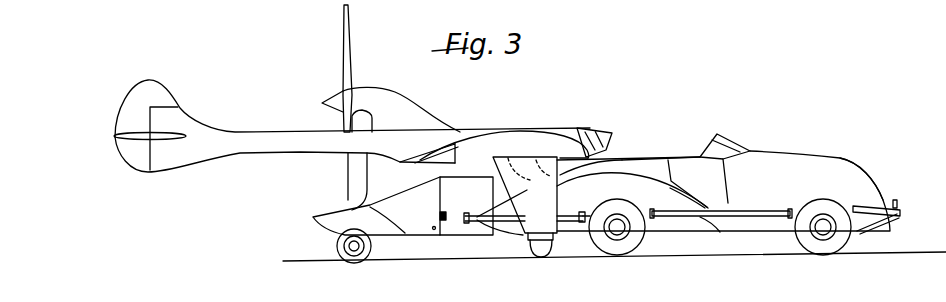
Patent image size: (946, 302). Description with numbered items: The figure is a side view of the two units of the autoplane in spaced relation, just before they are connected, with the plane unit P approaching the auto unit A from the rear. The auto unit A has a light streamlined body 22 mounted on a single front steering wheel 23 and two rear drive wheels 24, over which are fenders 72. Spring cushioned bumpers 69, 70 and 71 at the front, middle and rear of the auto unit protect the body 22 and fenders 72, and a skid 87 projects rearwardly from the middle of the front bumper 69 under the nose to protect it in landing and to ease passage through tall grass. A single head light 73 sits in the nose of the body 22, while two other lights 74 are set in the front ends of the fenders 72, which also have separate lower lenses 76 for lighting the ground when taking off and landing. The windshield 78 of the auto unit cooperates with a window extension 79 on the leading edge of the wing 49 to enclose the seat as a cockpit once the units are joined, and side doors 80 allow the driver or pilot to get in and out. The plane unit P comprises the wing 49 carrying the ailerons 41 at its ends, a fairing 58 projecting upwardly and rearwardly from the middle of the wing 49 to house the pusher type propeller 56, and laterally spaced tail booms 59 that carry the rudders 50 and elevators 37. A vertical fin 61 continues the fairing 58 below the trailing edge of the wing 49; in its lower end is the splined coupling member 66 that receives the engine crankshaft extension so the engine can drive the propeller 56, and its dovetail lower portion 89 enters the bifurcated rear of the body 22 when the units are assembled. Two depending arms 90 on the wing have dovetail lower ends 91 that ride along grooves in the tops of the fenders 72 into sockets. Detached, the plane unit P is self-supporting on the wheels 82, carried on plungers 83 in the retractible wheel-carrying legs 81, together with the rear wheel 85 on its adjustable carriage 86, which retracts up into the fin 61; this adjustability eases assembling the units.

The rudders 50 is at (152, 85).
The elevators 37 is at (128, 139).
The tail booms 59 is at (298, 148).
The pusher type propeller 56 is at (348, 52).
The fairing 58 is at (412, 112).
The vertical fin 61 is at (378, 181).
The ailerons 41 is at (428, 157).
The dovetail lower portion 89 is at (438, 188).
The coupling member 66 is at (446, 214).
The carriage 86 is at (400, 240).
The rear wheel 85 is at (372, 249).
The plungers 83 is at (527, 236).
The wheels 82 is at (553, 250).
The retractible wheel-carrying legs 81 is at (524, 219).
The dovetail lower ends 91 is at (525, 195).
The depending arms 90 is at (527, 162).
The plane unit P is at (506, 140).
The wing 49 is at (567, 142).
The window extension 79 is at (603, 141).
The side doors 80 is at (677, 165).
The windshield 78 is at (723, 143).
The auto unit A is at (787, 150).
The head light 73 is at (865, 169).
The body 22 is at (723, 191).
The fenders 72 is at (633, 186).
The lights 74 is at (708, 197).
The rear bumper 71 is at (570, 213).
The rear drive wheels 24 is at (642, 239).
The lower lenses 76 is at (716, 235).
The middle bumper 70 is at (745, 214).
The front bumper 69 is at (900, 207).
The skid 87 is at (892, 226).
The front steering wheel 23 is at (850, 239).